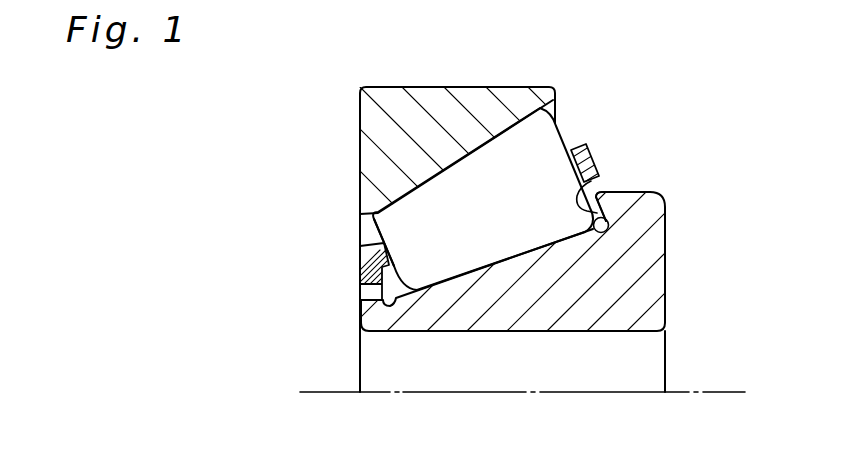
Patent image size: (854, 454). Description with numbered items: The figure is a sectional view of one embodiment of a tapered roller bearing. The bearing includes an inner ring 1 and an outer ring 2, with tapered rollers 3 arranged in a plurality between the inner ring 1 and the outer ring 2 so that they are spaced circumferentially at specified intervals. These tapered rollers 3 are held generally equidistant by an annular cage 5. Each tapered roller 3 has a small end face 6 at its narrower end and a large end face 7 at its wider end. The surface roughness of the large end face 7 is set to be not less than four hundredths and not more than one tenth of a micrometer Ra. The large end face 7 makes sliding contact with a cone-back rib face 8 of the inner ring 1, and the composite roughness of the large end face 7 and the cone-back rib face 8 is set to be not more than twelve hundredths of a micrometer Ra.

The inner ring 1 is at (653, 296).
The outer ring 2 is at (452, 103).
The tapered roller 3 is at (442, 190).
The annular cage 5 is at (362, 263).
The small end face 6 is at (378, 236).
The large end face 7 is at (563, 138).
The cone-back rib face 8 is at (597, 181).